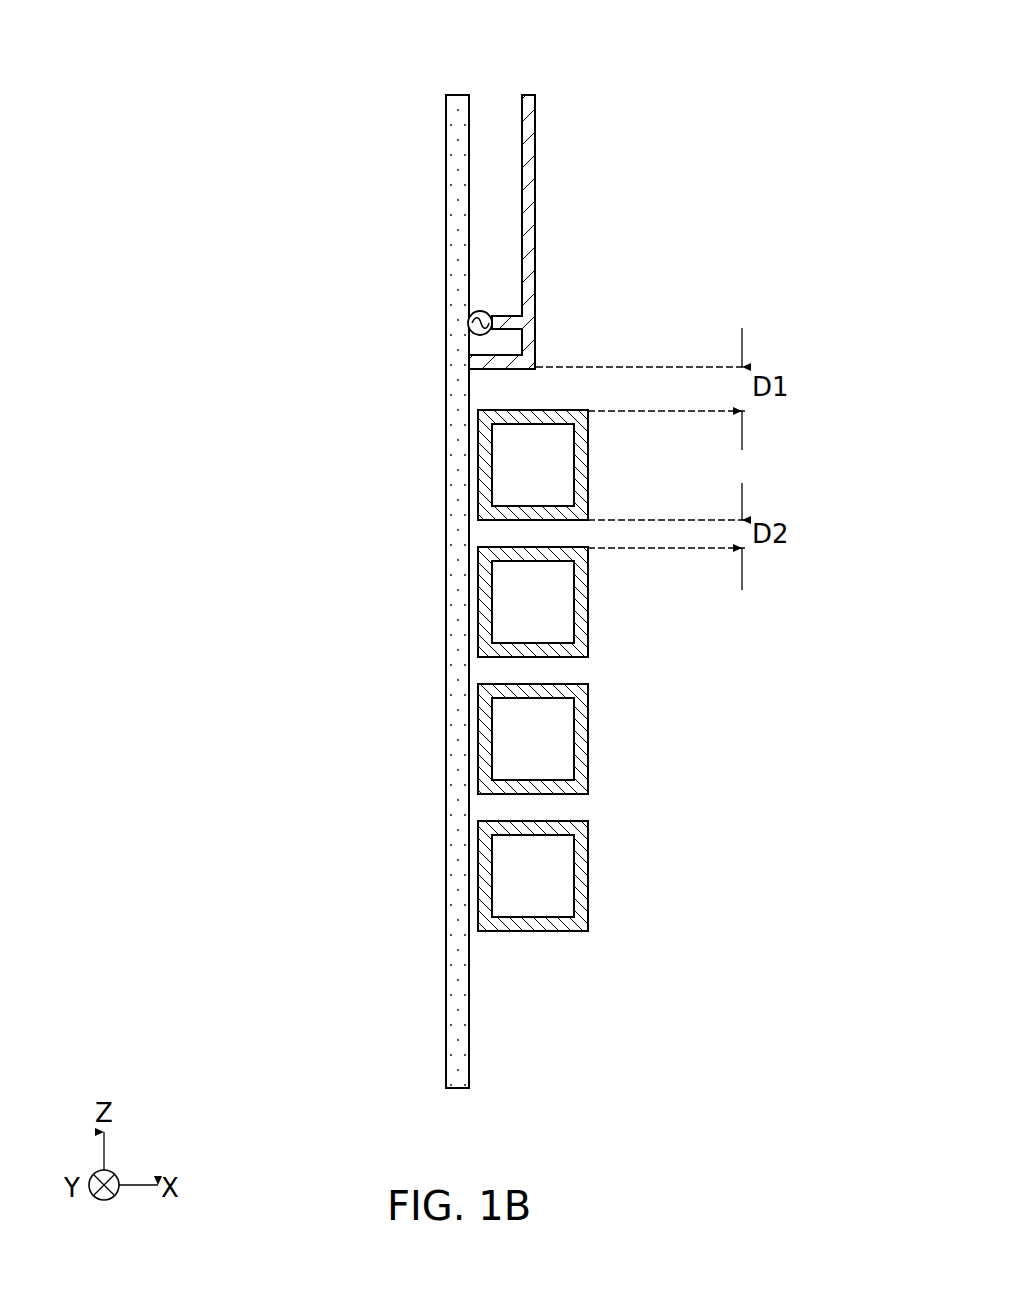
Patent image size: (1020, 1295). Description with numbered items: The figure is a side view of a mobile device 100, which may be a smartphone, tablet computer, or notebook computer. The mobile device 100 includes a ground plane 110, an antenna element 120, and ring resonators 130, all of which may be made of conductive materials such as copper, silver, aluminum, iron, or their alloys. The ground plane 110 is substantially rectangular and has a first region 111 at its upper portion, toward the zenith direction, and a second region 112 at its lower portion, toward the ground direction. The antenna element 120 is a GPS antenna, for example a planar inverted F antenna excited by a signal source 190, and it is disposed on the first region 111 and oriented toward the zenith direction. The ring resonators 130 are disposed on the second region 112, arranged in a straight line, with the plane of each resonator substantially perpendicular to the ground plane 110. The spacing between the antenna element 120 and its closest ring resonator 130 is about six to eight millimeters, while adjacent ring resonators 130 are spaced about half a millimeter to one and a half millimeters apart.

The mobile device 100 is at (703, 48).
The ground plane 110 is at (206, 1018).
The first region 111 is at (460, 300).
The second region 112 is at (460, 1001).
The antenna element 120 is at (536, 212).
The ring resonators 130 is at (588, 464).
The signal source 190 is at (480, 311).